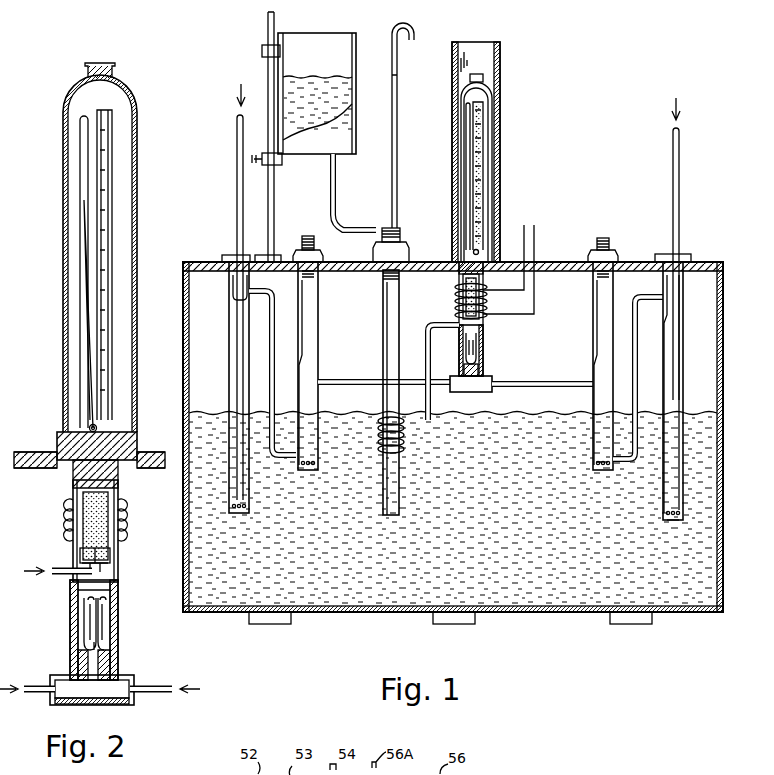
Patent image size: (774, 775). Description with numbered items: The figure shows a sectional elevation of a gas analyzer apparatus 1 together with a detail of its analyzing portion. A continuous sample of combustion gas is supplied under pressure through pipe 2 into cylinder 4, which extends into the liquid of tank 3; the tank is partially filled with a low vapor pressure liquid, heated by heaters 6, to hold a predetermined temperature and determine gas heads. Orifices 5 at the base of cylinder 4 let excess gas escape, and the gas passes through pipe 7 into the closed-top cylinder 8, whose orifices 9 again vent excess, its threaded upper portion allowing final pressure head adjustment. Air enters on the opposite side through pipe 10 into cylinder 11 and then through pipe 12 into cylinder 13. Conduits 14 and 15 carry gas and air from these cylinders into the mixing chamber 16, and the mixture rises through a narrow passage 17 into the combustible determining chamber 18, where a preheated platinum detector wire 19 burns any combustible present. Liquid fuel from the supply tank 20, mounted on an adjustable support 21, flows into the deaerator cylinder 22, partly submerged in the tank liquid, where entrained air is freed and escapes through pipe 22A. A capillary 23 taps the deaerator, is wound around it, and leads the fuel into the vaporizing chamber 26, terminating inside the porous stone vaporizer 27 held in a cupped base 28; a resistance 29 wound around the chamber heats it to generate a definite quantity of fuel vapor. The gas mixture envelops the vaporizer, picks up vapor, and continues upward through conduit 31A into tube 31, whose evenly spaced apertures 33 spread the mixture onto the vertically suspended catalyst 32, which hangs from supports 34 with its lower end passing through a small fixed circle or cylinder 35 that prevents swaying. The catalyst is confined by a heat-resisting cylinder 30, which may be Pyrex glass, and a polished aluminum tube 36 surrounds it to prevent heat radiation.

In FIG. 1, the apparatus 1 is at (739, 419).
In FIG. 1, the pipe 2 is at (678, 189).
In FIG. 1, the tank 3 is at (352, 614).
In FIG. 1, the cylinder 4 is at (683, 376).
In FIG. 1, the orifices 5 is at (672, 520).
In FIG. 1, the heaters 6 is at (278, 624).
In FIG. 1, the pipe 7 is at (632, 347).
In FIG. 1, the cylinder 8 is at (586, 334).
In FIG. 1, the orifices 9 is at (600, 472).
In FIG. 1, the pipe 10 is at (235, 201).
In FIG. 1, the cylinder 11 is at (229, 334).
In FIG. 1, the pipe 12 is at (261, 294).
In FIG. 1, the cylinder 13 is at (318, 320).
In FIG. 1, the conduit 14 is at (528, 380).
In FIG. 2, the conduit 14 is at (168, 686).
In FIG. 1, the conduit 15 is at (339, 380).
In FIG. 2, the conduit 15 is at (40, 684).
In FIG. 1, the mixing chamber 16 is at (484, 376).
In FIG. 2, the mixing chamber 16 is at (130, 675).
In FIG. 1, the narrow passage 17 is at (464, 367).
In FIG. 2, the narrow passage 17 is at (101, 666).
In FIG. 1, the combustible determining chamber 18 is at (483, 339).
In FIG. 2, the combustible determining chamber 18 is at (118, 620).
In FIG. 1, the detector wire 19 is at (476, 349).
In FIG. 2, the detector wire 19 is at (88, 619).
In FIG. 1, the supply tank 20 is at (356, 113).
In FIG. 1, the adjustable support 21 is at (277, 203).
In FIG. 1, the cylinder 22 is at (403, 246).
In FIG. 1, the pipe 22A is at (398, 157).
In FIG. 1, the capillary 23 is at (431, 398).
In FIG. 2, the capillary 23 is at (66, 562).
In FIG. 1, the vaporizing chamber 26 is at (460, 284).
In FIG. 2, the vaporizing chamber 26 is at (80, 493).
In FIG. 1, the stone vaporizer 27 is at (466, 309).
In FIG. 2, the stone vaporizer 27 is at (105, 493).
In FIG. 2, the cupped base 28 is at (110, 562).
In FIG. 2, the resistance 29 is at (121, 523).
In FIG. 2, the cylinder 30 is at (135, 340).
In FIG. 2, the tube 31 is at (112, 110).
In FIG. 2, the conduit 31A is at (76, 484).
In FIG. 2, the catalyst 32 is at (88, 348).
In FIG. 2, the apertures 33 is at (98, 208).
In FIG. 2, the supports 34 is at (80, 161).
In FIG. 2, the fixed circle or cylinder 35 is at (90, 425).
In FIG. 1, the polished aluminum tube 36 is at (501, 128).